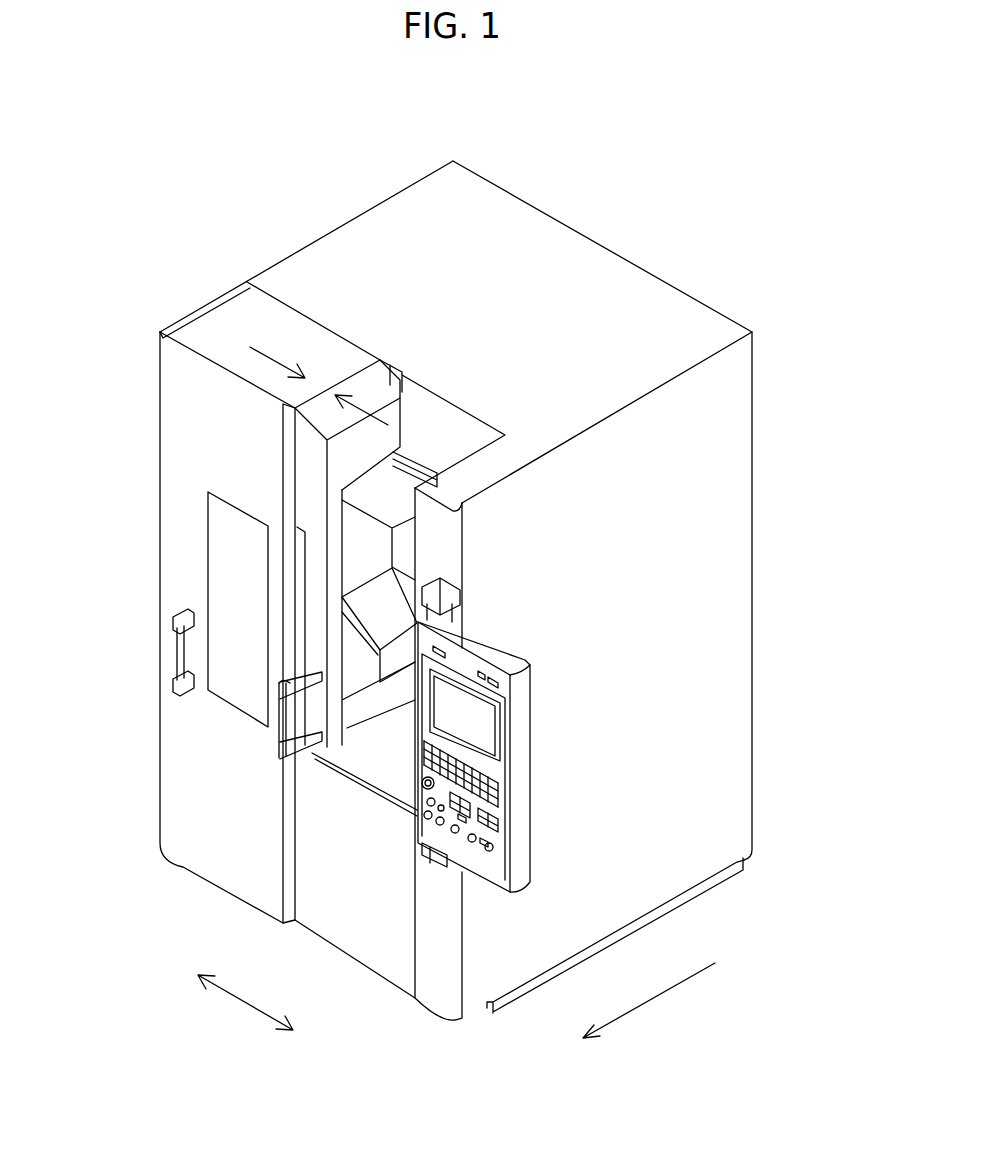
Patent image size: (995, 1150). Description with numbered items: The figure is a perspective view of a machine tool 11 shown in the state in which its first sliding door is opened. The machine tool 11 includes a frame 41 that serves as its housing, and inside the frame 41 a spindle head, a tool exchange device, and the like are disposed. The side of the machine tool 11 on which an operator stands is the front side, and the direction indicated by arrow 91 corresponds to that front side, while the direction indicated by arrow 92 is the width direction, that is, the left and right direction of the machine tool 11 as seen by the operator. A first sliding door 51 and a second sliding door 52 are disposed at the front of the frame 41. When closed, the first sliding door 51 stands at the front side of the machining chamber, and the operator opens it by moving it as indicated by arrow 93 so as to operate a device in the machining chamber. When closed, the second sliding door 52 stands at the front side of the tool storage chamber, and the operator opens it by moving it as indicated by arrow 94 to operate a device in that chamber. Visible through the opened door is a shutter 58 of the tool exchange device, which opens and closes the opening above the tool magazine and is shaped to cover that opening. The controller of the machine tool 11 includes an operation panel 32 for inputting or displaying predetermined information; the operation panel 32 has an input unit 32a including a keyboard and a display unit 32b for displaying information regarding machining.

The machine tool 11 is at (666, 202).
The frame 41 is at (697, 623).
The operation panel 32 is at (503, 813).
The input unit 32a is at (500, 787).
The display unit 32b is at (467, 712).
The first sliding door 51 is at (308, 478).
The second sliding door 52 is at (190, 402).
The shutter 58 is at (375, 605).
The arrow 91 is at (668, 997).
The arrow 92 is at (245, 1002).
The arrow 93 is at (358, 407).
The arrow 94 is at (267, 353).